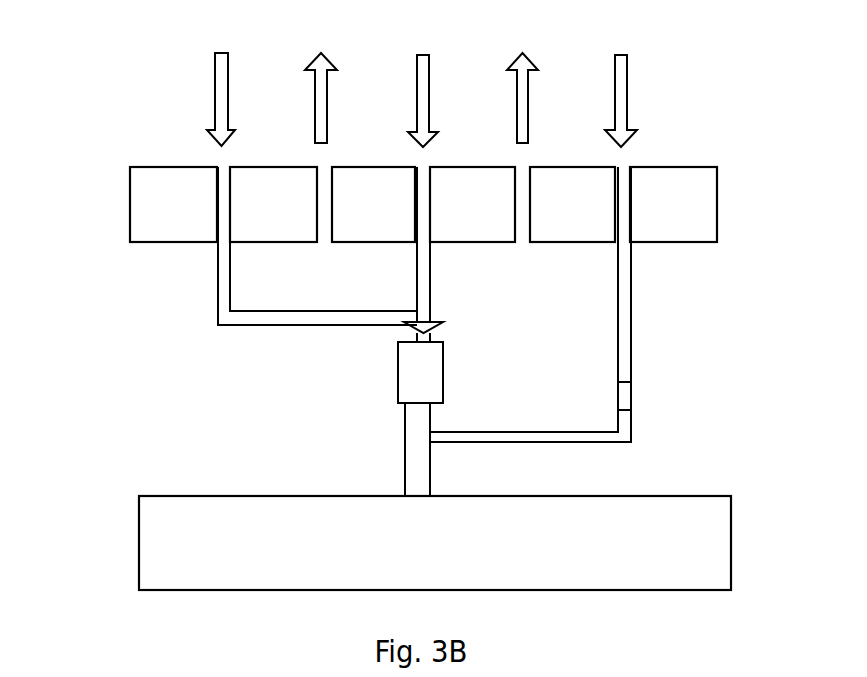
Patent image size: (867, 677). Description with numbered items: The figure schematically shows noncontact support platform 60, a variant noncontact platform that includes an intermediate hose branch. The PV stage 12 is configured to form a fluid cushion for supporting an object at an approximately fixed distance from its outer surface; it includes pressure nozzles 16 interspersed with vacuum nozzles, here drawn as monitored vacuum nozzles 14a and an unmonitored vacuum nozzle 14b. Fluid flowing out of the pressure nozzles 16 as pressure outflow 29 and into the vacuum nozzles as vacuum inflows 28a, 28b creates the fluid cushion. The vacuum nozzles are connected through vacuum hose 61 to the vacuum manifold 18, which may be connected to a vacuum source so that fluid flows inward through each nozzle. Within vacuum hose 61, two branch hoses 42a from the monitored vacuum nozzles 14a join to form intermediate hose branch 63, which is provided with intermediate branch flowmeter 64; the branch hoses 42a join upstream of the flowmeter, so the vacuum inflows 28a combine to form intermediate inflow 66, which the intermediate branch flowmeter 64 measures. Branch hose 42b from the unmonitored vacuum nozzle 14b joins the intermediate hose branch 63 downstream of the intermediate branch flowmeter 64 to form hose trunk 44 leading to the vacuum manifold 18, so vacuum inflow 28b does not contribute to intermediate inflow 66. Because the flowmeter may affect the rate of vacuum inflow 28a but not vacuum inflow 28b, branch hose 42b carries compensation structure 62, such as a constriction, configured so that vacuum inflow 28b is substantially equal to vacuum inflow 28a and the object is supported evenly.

The PV stage 12 is at (131, 205).
The monitored vacuum nozzles 14a is at (224, 184).
The unmonitored vacuum nozzle 14b is at (625, 187).
The pressure nozzles 16 is at (325, 187).
The vacuum manifold 18 is at (139, 553).
The vacuum inflows 28a is at (217, 102).
The vacuum inflow 28b is at (622, 97).
The pressure outflow 29 is at (316, 103).
The branch hoses 42a is at (217, 275).
The branch hose 42b is at (632, 262).
The hose trunk 44 is at (405, 477).
The noncontact support platform 60 is at (725, 128).
The vacuum hose 61 is at (686, 335).
The compensation structure 62 is at (632, 393).
The intermediate hose branch 63 is at (430, 418).
The intermediate branch flowmeter 64 is at (398, 378).
The intermediate inflow 66 is at (417, 312).